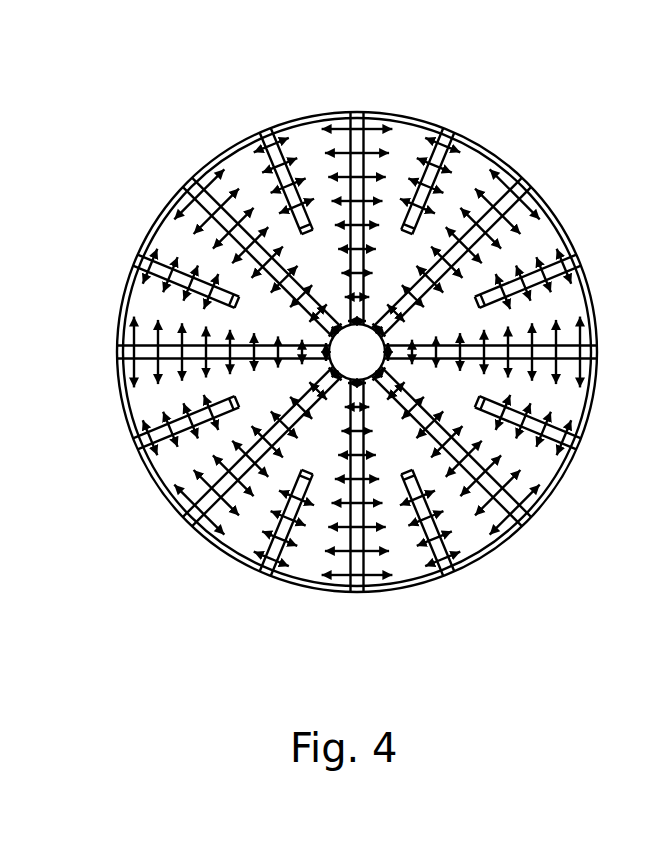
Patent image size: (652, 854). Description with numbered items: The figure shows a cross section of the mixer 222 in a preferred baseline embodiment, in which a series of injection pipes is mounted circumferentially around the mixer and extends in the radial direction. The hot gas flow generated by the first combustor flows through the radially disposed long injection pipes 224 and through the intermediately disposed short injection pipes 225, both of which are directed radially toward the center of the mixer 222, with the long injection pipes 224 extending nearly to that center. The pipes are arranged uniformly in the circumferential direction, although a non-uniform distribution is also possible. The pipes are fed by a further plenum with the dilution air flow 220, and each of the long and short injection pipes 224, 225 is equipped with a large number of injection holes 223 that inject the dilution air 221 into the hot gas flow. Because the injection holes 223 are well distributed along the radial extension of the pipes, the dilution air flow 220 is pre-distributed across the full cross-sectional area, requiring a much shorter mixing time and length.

The dilution air flow 220 is at (357, 98).
The dilution air 221 is at (187, 195).
The mixer 222 is at (418, 120).
The injection holes 223 is at (273, 575).
The long injection pipes 224 is at (357, 596).
The short injection pipes 225 is at (450, 578).